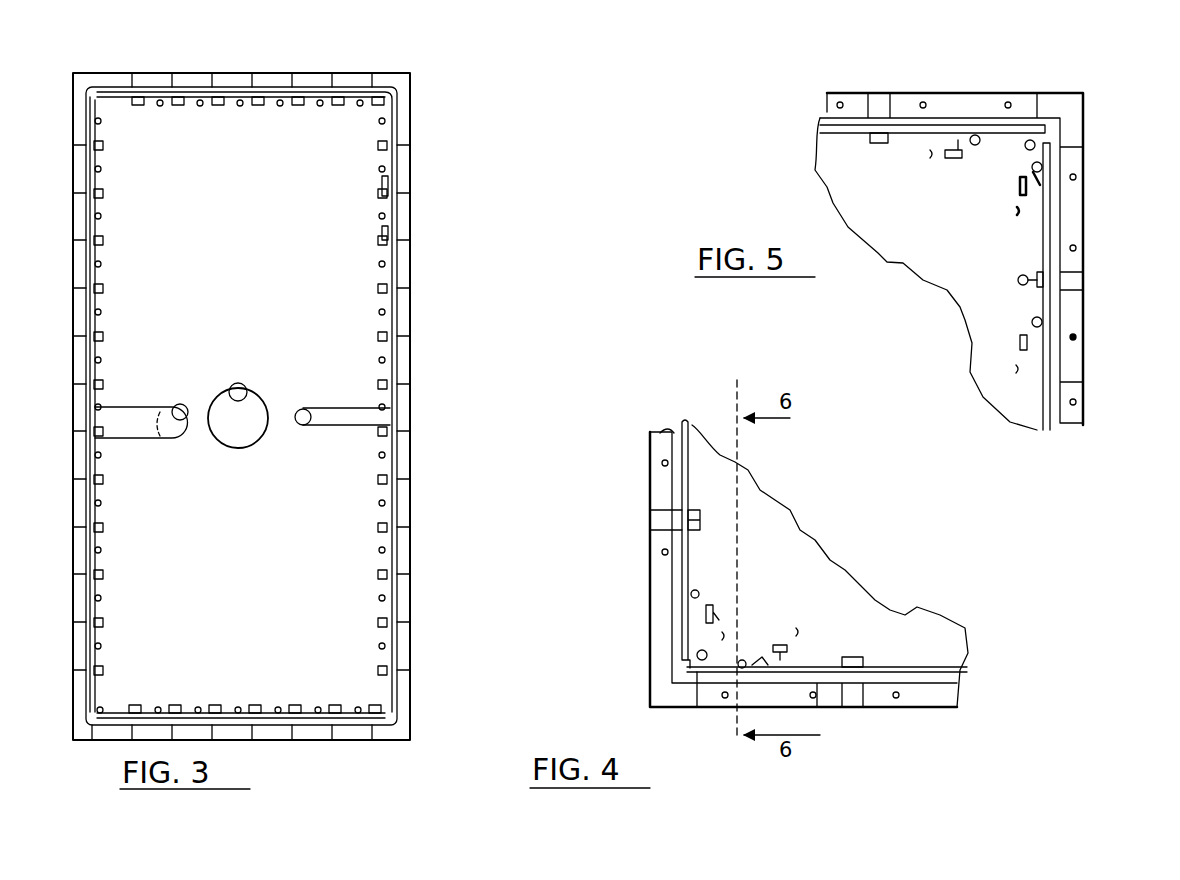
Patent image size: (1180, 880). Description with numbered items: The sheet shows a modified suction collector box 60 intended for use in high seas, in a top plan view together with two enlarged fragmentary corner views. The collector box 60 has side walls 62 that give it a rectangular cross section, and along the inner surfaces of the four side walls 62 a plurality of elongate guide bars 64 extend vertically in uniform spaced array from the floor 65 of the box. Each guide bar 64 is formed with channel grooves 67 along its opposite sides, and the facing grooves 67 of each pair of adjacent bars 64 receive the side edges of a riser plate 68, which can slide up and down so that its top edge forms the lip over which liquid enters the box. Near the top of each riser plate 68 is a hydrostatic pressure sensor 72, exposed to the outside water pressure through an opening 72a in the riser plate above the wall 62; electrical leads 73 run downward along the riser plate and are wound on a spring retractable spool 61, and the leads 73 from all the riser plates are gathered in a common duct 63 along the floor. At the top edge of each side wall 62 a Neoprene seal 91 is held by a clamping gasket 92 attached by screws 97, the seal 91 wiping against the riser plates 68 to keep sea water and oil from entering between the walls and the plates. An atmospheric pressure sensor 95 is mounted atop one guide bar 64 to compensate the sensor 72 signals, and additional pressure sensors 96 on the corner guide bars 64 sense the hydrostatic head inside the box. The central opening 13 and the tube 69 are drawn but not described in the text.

In FIG. 3, the collector box 60 is at (427, 212).
In FIG. 4, the collector box 60 is at (619, 605).
In FIG. 5, the collector box 60 is at (1102, 163).
In FIG. 3, the side walls 62 is at (272, 73).
In FIG. 4, the side walls 62 is at (652, 493).
In FIG. 5, the side walls 62 is at (985, 93).
In FIG. 3, the guide bars 64 is at (104, 193).
In FIG. 4, the guide bars 64 is at (700, 520).
In FIG. 5, the guide bars 64 is at (1056, 128).
In FIG. 3, the riser plates 68 is at (306, 104).
In FIG. 4, the riser plates 68 is at (690, 470).
In FIG. 5, the riser plates 68 is at (1036, 262).
In FIG. 3, the channel grooves 67 is at (386, 188).
In FIG. 3, the floor 65 is at (245, 279).
In FIG. 3, the hydrostatic pressure sensor 72 is at (101, 353).
In FIG. 4, the hydrostatic pressure sensor 72 is at (698, 600).
In FIG. 5, the hydrostatic pressure sensor 72 is at (975, 146).
In FIG. 3, the lock opening 13 is at (243, 391).
In FIG. 3, the tube 69 is at (185, 406).
In FIG. 3, the common duct 63 is at (305, 411).
In FIG. 4, the seal 91 is at (676, 456).
In FIG. 5, the seal 91 is at (910, 118).
In FIG. 4, the additional pressure sensors 96 is at (700, 659).
In FIG. 5, the additional pressure sensors 96 is at (1032, 140).
In FIG. 5, the screws 97 is at (1074, 175).
In FIG. 5, the clamping gasket 92 is at (1067, 220).
In FIG. 5, the opening 72a is at (1017, 223).
In FIG. 5, the atmospheric pressure sensor 95 is at (1019, 280).
In FIG. 4, the spring retractable spool 61 is at (715, 606).
In FIG. 5, the spring retractable spool 61 is at (1020, 343).
In FIG. 4, the electrical leads 73 is at (720, 632).